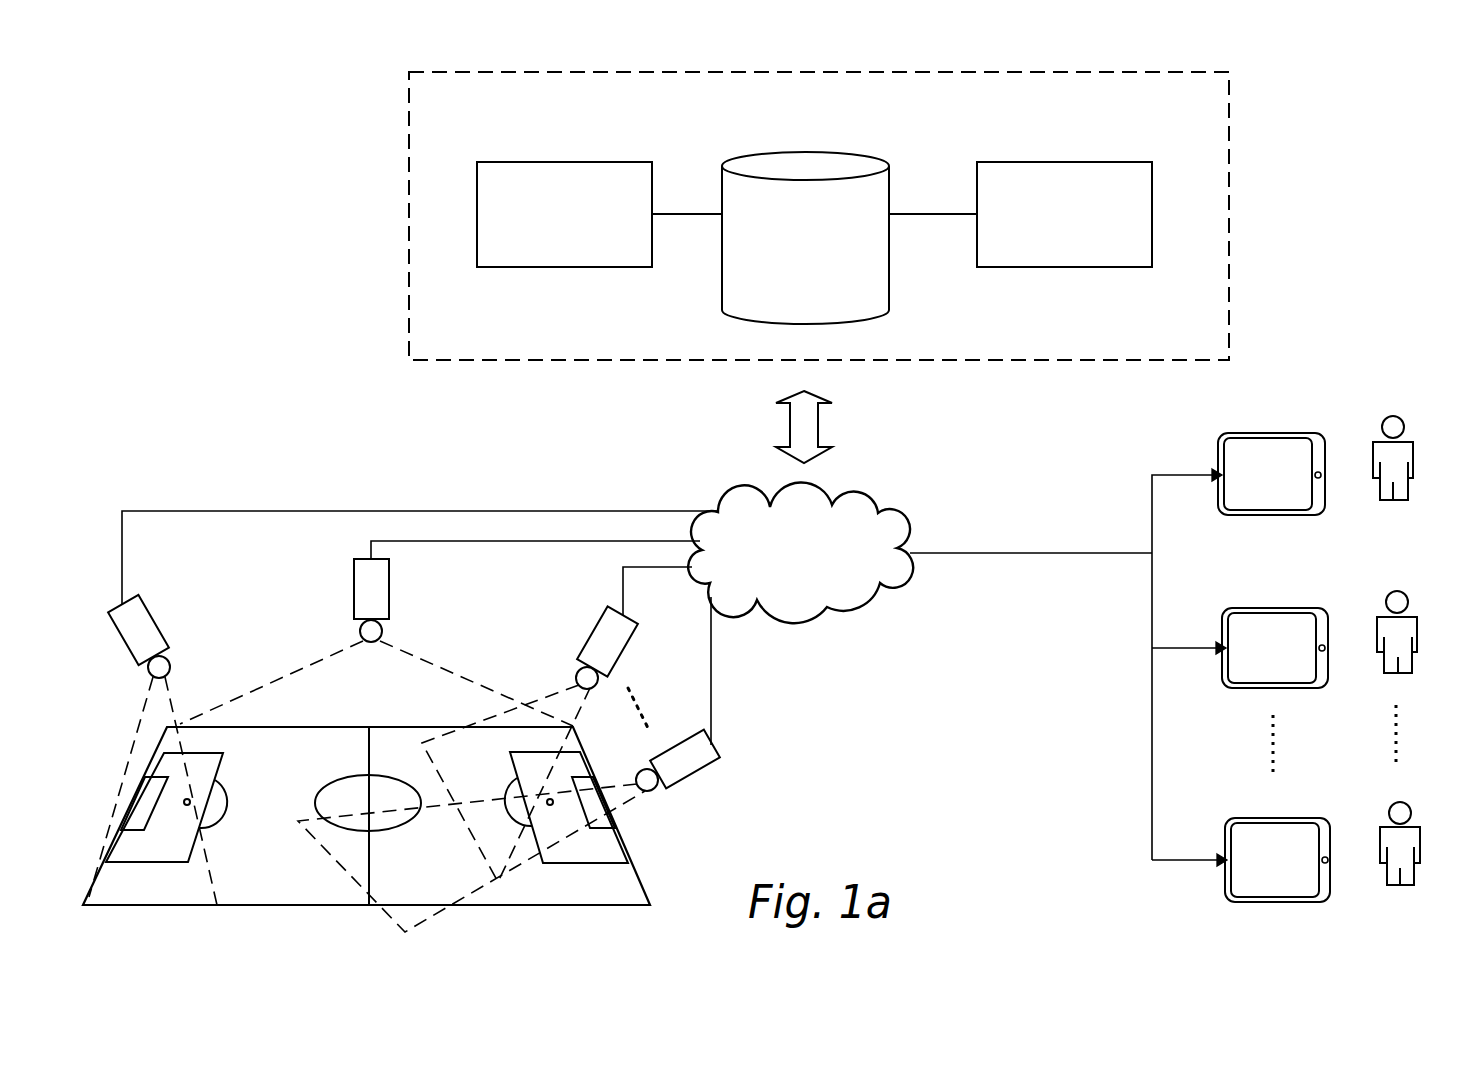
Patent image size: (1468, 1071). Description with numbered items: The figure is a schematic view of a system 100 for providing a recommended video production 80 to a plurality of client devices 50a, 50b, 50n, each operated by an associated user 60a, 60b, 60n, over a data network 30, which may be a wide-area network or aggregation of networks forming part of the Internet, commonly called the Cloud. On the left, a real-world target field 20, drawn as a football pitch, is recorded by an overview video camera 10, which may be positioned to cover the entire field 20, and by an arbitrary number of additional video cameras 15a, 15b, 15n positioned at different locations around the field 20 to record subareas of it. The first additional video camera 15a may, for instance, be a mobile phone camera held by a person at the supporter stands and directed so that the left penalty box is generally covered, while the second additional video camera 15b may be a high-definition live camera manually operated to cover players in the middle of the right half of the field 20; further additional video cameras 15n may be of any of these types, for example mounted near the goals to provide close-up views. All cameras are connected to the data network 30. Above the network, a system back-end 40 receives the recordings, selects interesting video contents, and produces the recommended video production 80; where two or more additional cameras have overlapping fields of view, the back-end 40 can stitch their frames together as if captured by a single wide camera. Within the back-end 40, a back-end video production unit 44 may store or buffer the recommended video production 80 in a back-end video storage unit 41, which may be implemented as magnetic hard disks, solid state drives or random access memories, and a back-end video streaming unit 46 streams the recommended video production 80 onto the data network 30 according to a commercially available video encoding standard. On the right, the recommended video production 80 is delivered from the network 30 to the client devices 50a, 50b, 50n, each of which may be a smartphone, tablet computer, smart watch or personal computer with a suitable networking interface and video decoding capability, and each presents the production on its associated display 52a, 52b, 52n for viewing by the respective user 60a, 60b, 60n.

The system 100 is at (208, 50).
The system back-end 40 is at (819, 216).
The back-end video production unit 44 is at (564, 214).
The back-end video storage unit 41 is at (805, 238).
The back-end video streaming unit 46 is at (1064, 214).
The data network 30 is at (800, 552).
The overview video camera 10 is at (389, 583).
The first additional video camera 15a is at (158, 606).
The second additional video camera 15b is at (598, 636).
The additional video camera 15n is at (717, 752).
The real-world target field 20 is at (633, 850).
The recommended video production 80 is at (1022, 554).
The client device 50a is at (1279, 443).
The client device 50b is at (1284, 617).
The client device 50n is at (1286, 829).
The display 52a is at (1268, 474).
The display 52b is at (1272, 648).
The display 52n is at (1275, 860).
The user 60a is at (1409, 440).
The user 60b is at (1413, 615).
The user 60n is at (1412, 826).